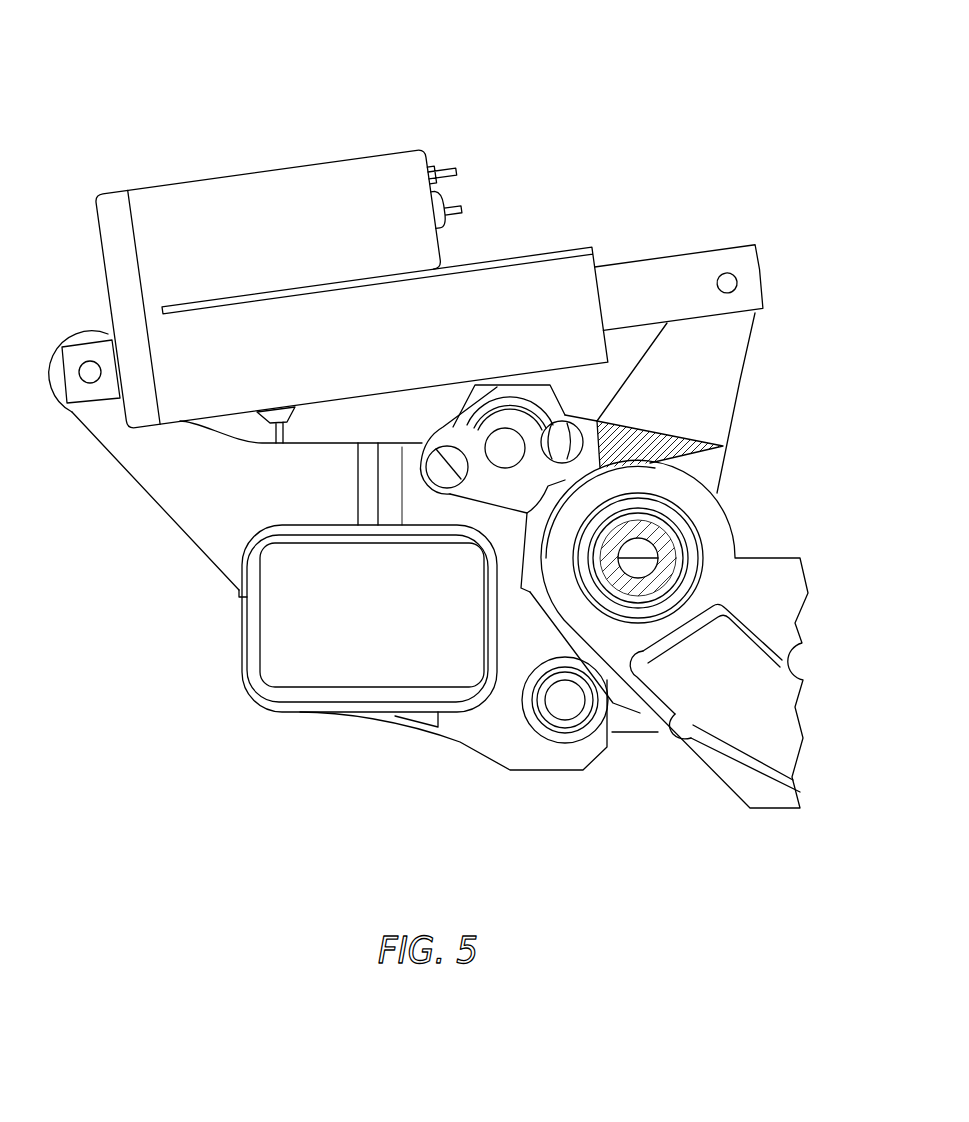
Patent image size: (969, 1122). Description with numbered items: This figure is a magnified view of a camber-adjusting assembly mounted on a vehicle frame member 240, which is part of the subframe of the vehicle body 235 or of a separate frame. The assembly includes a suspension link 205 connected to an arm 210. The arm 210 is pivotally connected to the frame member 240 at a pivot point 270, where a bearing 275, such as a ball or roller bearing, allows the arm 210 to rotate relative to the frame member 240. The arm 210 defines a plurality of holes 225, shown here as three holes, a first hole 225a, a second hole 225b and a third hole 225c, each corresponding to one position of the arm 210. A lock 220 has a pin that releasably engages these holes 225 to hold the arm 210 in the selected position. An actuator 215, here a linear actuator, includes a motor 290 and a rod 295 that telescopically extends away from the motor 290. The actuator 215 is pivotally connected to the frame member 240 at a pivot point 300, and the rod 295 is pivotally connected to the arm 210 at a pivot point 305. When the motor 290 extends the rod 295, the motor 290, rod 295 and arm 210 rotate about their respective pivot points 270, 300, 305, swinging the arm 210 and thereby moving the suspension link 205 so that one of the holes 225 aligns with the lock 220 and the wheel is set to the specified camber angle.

The suspension link 205 is at (733, 590).
The arm 210 is at (718, 363).
The actuator 215 is at (275, 186).
The lock 220 is at (511, 392).
The plurality of holes 225 is at (459, 457).
The first hole 225a is at (563, 444).
The second hole 225b is at (504, 425).
The third hole 225c is at (437, 443).
The body 235 is at (163, 482).
The frame member 240 is at (207, 557).
The pivot point 270 is at (565, 703).
The bearing 275 is at (537, 672).
The motor 290 is at (247, 172).
The rod 295 is at (657, 258).
The pivot point 300 is at (90, 370).
The pivot point 305 is at (728, 278).